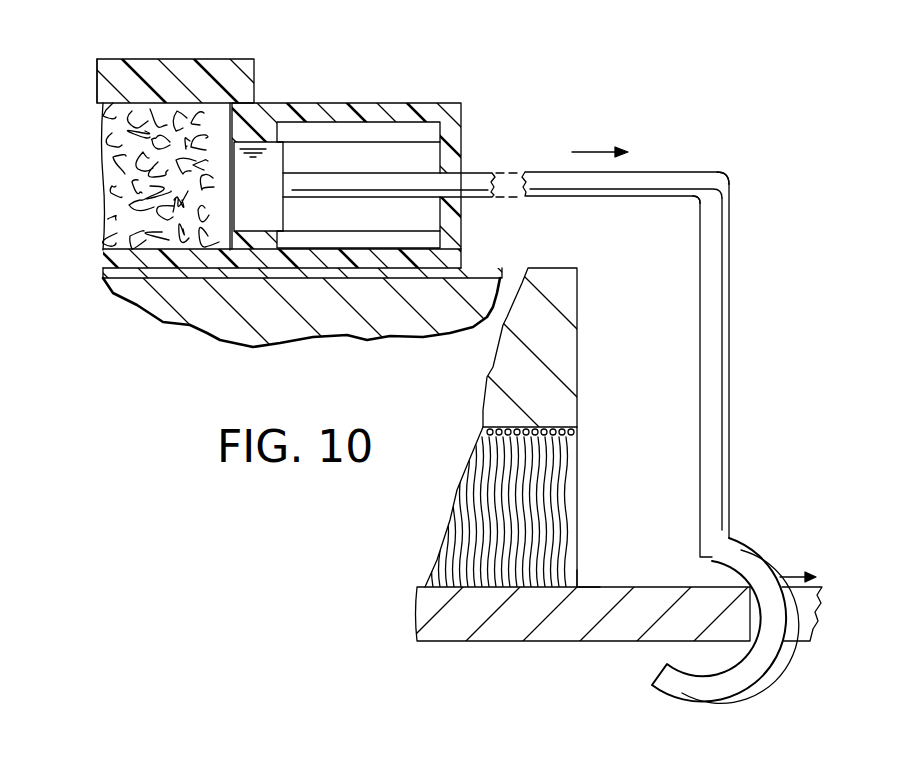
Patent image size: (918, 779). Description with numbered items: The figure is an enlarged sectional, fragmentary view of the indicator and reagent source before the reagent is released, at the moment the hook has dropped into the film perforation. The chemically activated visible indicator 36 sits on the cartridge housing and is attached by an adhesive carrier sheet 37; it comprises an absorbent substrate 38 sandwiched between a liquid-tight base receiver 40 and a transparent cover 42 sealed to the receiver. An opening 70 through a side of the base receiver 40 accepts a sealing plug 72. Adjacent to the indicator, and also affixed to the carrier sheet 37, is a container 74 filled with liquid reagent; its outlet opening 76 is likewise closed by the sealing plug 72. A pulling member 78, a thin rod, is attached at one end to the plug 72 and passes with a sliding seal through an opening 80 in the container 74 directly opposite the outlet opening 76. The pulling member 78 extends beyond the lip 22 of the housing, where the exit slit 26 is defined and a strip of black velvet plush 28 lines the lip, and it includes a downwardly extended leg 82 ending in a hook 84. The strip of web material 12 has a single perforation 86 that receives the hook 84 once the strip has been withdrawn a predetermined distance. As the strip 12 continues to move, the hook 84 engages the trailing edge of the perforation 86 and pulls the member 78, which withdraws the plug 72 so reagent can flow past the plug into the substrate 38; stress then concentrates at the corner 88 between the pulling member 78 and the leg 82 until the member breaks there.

The strip of web material 12 is at (465, 608).
The lip 22 is at (545, 365).
The exit slit 26 is at (586, 581).
The strip of black velvet plush 28 is at (535, 490).
The chemically activated visible indicator 36 is at (97, 80).
The adhesive carrier sheet 37 is at (478, 268).
The absorbent substrate 38 is at (108, 172).
The base receiver 40 is at (105, 258).
The transparent cover 42 is at (130, 85).
The opening 70 is at (283, 221).
The sealing plug 72 is at (247, 199).
The container 74 is at (352, 103).
The outlet opening 76 is at (283, 150).
The pulling member 78 is at (648, 172).
The opening 80 is at (461, 170).
The downwardly extended leg 82 is at (722, 352).
The hook 84 is at (710, 683).
The perforation 86 is at (797, 615).
The corner 88 is at (718, 180).